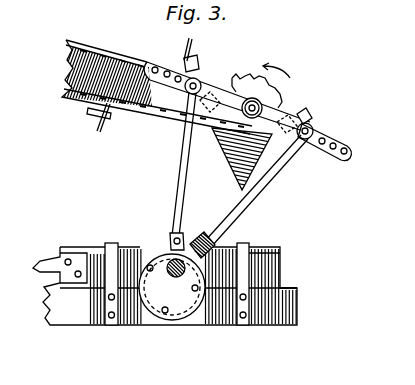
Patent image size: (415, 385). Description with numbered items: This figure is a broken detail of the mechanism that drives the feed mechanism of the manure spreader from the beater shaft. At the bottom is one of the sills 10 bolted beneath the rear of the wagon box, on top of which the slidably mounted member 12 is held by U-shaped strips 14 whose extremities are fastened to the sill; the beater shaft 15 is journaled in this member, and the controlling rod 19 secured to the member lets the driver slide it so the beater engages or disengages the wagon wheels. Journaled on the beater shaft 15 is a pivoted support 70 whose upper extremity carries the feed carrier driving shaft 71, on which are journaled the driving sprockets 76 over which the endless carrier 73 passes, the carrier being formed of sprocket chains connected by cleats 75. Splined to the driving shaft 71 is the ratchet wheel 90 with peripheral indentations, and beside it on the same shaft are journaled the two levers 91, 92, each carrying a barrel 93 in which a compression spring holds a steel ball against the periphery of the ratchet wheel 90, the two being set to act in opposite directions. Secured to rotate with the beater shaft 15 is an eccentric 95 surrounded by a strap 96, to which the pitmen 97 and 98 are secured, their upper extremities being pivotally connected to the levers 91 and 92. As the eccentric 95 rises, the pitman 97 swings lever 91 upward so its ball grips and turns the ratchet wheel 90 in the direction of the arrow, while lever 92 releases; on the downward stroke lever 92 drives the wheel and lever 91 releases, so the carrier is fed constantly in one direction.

The sill 10 is at (68, 318).
The slidably mounted member 12 is at (293, 240).
The U-shaped strip 14 is at (110, 250).
The beater shaft 15 is at (182, 273).
The controlling rod 19 is at (67, 276).
The pivoted support 70 is at (223, 117).
The feed carrier driving shaft 71 is at (250, 106).
The endless carrier 73 is at (137, 52).
The cleat 75 is at (195, 64).
The driving sprocket 76 is at (98, 131).
The ratchet wheel 90 is at (277, 100).
The lever 91 is at (318, 134).
The lever 92 is at (204, 80).
The barrel 93 is at (309, 112).
The eccentric 95 is at (168, 316).
The strap 96 is at (170, 252).
The pitman 97 is at (262, 190).
The pitman 98 is at (184, 166).